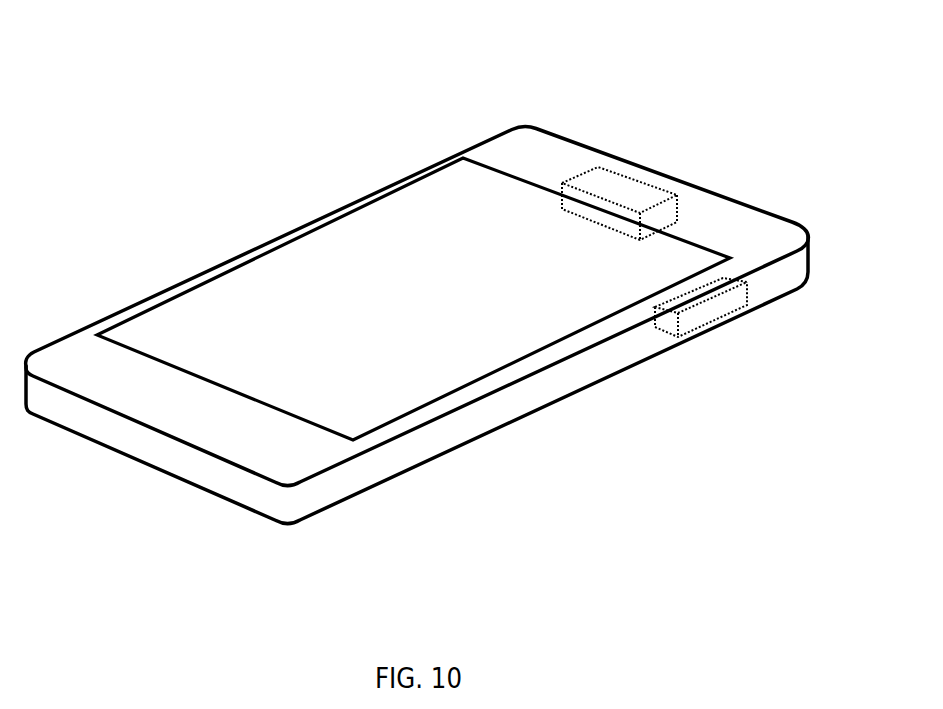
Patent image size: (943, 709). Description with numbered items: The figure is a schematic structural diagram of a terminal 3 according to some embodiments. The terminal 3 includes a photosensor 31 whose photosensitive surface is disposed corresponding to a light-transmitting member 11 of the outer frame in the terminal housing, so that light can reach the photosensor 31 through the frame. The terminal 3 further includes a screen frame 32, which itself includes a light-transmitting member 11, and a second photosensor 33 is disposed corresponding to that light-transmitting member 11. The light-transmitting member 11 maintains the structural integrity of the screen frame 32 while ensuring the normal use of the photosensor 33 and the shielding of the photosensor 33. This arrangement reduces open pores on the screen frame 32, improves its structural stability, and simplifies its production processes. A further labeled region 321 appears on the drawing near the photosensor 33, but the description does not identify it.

The terminal 3 is at (186, 137).
The light-transmitting member 11 is at (603, 366).
The screen frame 32 is at (413, 170).
The light-transmitting region of display screen 321 is at (560, 176).
The photosensor 33 is at (625, 193).
The photosensor 31 is at (715, 310).